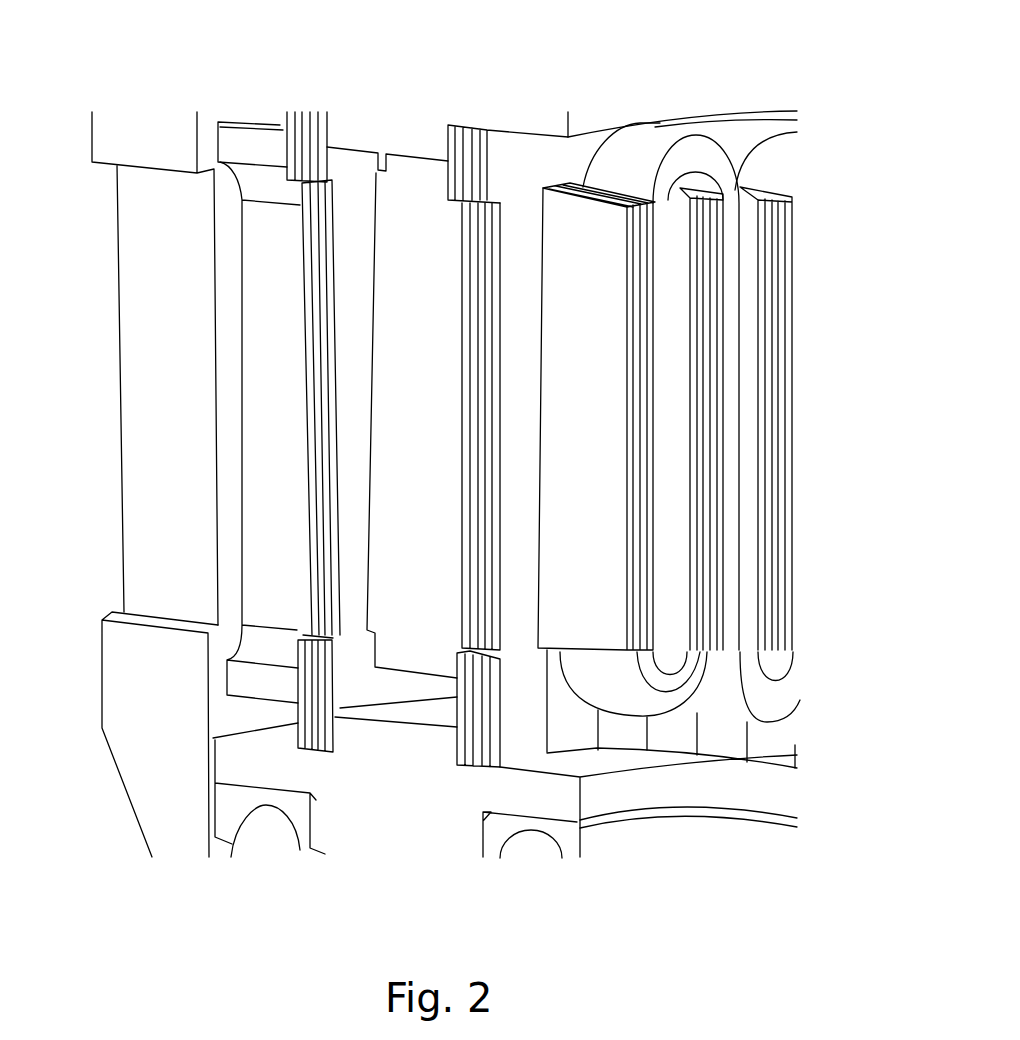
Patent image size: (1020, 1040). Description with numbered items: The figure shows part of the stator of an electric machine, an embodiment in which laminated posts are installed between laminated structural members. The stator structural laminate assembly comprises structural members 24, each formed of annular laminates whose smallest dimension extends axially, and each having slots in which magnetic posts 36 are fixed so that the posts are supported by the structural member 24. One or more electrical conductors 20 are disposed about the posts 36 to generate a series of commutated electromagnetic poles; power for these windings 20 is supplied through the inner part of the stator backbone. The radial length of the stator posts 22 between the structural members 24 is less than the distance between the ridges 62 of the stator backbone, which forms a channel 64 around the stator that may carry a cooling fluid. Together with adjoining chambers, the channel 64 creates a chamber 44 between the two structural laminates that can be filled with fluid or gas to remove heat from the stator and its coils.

The electrical conductors 20 is at (662, 140).
The stator posts 22 is at (405, 353).
The structural member 24 is at (513, 172).
The magnetic posts 36 is at (597, 347).
The chamber 44 is at (353, 217).
The ridges 62 is at (415, 130).
The channel 64 is at (388, 692).